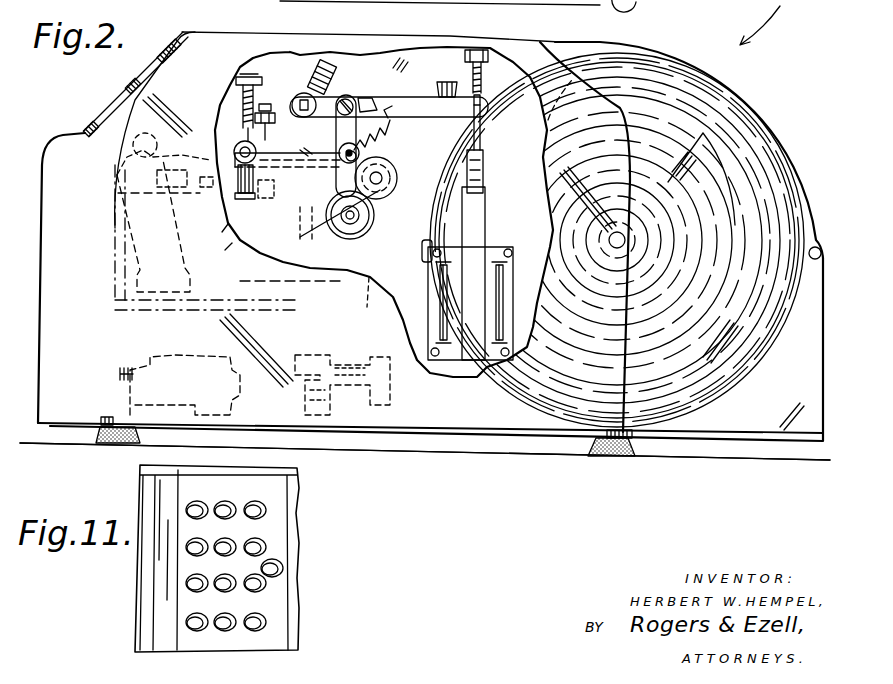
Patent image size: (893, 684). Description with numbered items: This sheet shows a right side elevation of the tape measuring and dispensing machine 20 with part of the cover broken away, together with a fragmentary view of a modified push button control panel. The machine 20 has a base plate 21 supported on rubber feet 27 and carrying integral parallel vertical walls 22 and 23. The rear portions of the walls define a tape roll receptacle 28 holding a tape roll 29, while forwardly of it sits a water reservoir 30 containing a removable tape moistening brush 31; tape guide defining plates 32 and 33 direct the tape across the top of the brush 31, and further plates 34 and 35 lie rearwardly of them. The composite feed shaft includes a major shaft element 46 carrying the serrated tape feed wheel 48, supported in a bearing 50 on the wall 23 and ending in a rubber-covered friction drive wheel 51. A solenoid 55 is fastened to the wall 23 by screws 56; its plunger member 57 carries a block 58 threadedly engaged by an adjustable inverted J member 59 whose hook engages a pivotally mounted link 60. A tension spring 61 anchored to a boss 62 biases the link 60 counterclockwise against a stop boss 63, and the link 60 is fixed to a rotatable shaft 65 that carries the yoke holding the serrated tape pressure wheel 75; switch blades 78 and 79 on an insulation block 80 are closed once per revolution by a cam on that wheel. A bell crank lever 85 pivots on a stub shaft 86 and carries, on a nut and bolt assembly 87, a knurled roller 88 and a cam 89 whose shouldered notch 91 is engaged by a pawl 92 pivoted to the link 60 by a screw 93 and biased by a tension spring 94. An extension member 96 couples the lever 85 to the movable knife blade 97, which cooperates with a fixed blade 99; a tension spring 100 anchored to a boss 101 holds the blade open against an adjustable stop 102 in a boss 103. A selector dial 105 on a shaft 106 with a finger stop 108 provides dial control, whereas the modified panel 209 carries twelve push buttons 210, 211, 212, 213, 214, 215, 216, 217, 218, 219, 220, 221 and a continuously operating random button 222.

In FIG. 2, the machine 20 is at (766, 22).
In FIG. 2, the base plate 21 is at (518, 448).
In FIG. 2, the vertical wall 22 is at (66, 140).
In FIG. 2, the vertical wall 23 is at (380, 50).
In FIG. 2, the rubber feet 27 is at (95, 438).
In FIG. 2, the tape roll receptacle 28 is at (563, 100).
In FIG. 2, the tape roll 29 is at (760, 108).
In FIG. 2, the water reservoir 30 is at (330, 282).
In FIG. 2, the tape moistening brush 31 is at (143, 240).
In FIG. 2, the tape guide defining plate 32 is at (180, 150).
In FIG. 2, the tape guide defining plate 33 is at (210, 200).
In FIG. 2, the tape guide defining plate 34 is at (270, 198).
In FIG. 2, the tape guide defining plate 35 is at (300, 222).
In FIG. 2, the major shaft element 46 is at (392, 187).
In FIG. 2, the tape feed wheel 48 is at (371, 301).
In FIG. 2, the bearing 50 is at (324, 227).
In FIG. 2, the friction drive wheel 51 is at (392, 248).
In FIG. 2, the solenoid 55 is at (505, 316).
In FIG. 2, the screws 56 is at (508, 249).
In FIG. 2, the plunger member 57 is at (488, 215).
In FIG. 2, the block 58 is at (483, 175).
In FIG. 2, the inverted J member 59 is at (500, 110).
In FIG. 2, the link 60 is at (430, 117).
In FIG. 2, the tension spring 61 is at (482, 86).
In FIG. 2, the boss 62 is at (485, 55).
In FIG. 2, the stop boss 63 is at (440, 82).
In FIG. 2, the rotatable shaft 65 is at (287, 155).
In FIG. 2, the tape pressure wheel 75 is at (388, 132).
In FIG. 2, the switch blade 78 is at (347, 98).
In FIG. 2, the switch blade 79 is at (368, 98).
In FIG. 2, the laminated insulation block 80 is at (318, 62).
In FIG. 2, the bell crank lever 85 is at (246, 199).
In FIG. 2, the stub shaft 86 is at (362, 162).
In FIG. 2, the nut and bolt assembly 87 is at (384, 177).
In FIG. 2, the roller 88 is at (360, 152).
In FIG. 2, the cam 89 is at (395, 3).
In FIG. 2, the shouldered notch 91 is at (300, 237).
In FIG. 2, the pawl 92 is at (320, 120).
In FIG. 2, the screw 93 is at (341, 93).
In FIG. 2, the tension spring 94 is at (385, 118).
In FIG. 2, the extension member 96 is at (233, 153).
In FIG. 2, the knife blade 97 is at (222, 232).
In FIG. 2, the fixed blade 99 is at (225, 250).
In FIG. 2, the tension spring 100 is at (236, 97).
In FIG. 2, the boss 101 is at (263, 77).
In FIG. 2, the adjustable stop 102 is at (268, 103).
In FIG. 2, the boss 103 is at (265, 172).
In FIG. 2, the selector dial 105 is at (112, 97).
In FIG. 2, the shaft 106 is at (130, 80).
In FIG. 2, the finger stop 108 is at (178, 32).
In FIG. 11, the panel 209 is at (272, 493).
In FIG. 11, the push button 210 is at (265, 517).
In FIG. 11, the push button 211 is at (265, 550).
In FIG. 11, the push button 212 is at (265, 587).
In FIG. 11, the push button 213 is at (265, 624).
In FIG. 11, the push button 214 is at (243, 494).
In FIG. 11, the push button 215 is at (248, 536).
In FIG. 11, the push button 216 is at (245, 572).
In FIG. 11, the push button 217 is at (230, 614).
In FIG. 11, the push button 218 is at (186, 505).
In FIG. 11, the push button 219 is at (190, 538).
In FIG. 11, the push button 220 is at (186, 583).
In FIG. 11, the push button 221 is at (186, 622).
In FIG. 11, the random button 222 is at (283, 568).